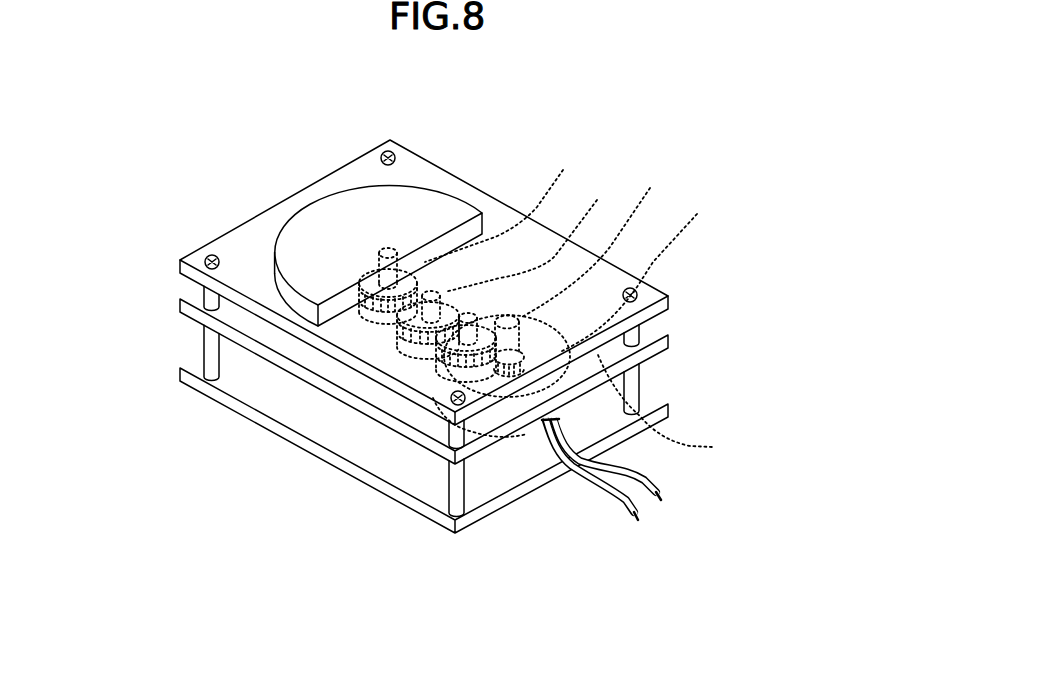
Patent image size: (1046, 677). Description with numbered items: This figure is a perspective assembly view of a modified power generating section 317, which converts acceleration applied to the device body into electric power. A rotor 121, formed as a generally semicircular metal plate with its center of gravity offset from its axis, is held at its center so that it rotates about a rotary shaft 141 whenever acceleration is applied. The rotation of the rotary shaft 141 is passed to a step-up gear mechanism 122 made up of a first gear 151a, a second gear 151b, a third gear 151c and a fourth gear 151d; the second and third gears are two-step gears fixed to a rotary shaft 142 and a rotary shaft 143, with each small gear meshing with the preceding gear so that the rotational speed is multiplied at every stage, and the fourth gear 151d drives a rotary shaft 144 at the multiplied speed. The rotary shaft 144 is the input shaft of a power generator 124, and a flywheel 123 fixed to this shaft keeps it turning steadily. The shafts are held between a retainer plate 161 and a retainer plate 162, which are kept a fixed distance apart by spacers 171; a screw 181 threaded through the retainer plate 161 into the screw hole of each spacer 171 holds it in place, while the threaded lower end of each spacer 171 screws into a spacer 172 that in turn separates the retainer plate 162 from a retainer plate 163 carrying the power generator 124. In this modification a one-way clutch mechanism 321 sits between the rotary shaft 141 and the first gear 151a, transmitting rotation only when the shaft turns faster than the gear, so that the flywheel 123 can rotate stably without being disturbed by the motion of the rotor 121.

The power generating section 317 is at (183, 115).
The rotor 121 is at (315, 233).
The step-up gear mechanism 122 is at (576, 235).
The flywheel 123 is at (592, 409).
The power generator 124 is at (536, 424).
The rotary shaft 141 is at (389, 249).
The rotary shaft 142 is at (445, 330).
The rotary shaft 143 is at (472, 340).
The rotary shaft 144 is at (507, 328).
The first gear 151a is at (509, 204).
The second gear 151b is at (534, 233).
The third gear 151c is at (600, 240).
The fourth gear 151d is at (643, 271).
The retainer plate 161 is at (668, 297).
The retainer plate 162 is at (640, 378).
The retainer plate 163 is at (650, 397).
The spacer 171 is at (204, 289).
The spacer 172 is at (204, 357).
The screw 181 is at (384, 152).
The one-way clutch mechanism 321 is at (383, 312).